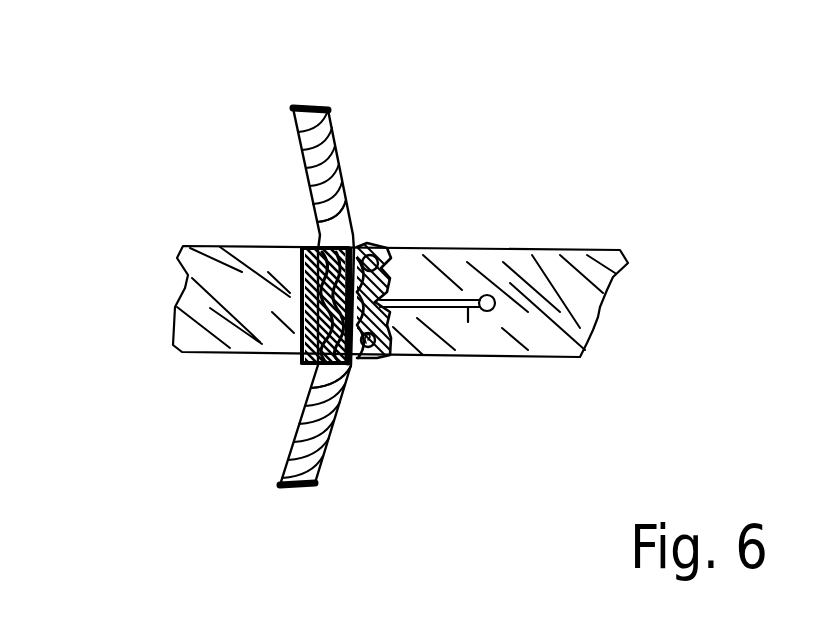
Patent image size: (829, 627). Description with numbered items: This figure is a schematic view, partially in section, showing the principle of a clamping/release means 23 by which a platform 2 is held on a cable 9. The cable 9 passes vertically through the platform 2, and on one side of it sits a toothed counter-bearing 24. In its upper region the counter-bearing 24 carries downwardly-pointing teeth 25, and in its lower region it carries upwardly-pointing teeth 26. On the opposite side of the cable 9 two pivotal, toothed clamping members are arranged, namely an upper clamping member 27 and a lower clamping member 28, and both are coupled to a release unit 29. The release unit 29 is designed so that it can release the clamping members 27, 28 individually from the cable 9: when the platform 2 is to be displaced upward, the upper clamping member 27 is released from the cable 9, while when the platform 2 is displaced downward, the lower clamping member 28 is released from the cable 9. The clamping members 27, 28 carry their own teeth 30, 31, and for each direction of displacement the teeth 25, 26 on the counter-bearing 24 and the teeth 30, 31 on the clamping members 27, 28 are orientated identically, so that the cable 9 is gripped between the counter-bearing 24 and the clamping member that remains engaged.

The platform 2 is at (578, 225).
The cable 9 is at (298, 137).
The clamping/release means 23 is at (398, 210).
The toothed counter-bearing 24 is at (300, 313).
The downwardly-pointing teeth 25 is at (302, 264).
The upwardly-pointing teeth 26 is at (297, 338).
The upper clamping member 27 is at (394, 262).
The lower clamping member 28 is at (390, 330).
The release unit 29 is at (468, 322).
The teeth on the upper clamping member 30 is at (349, 213).
The teeth on the lower clamping member 31 is at (345, 378).